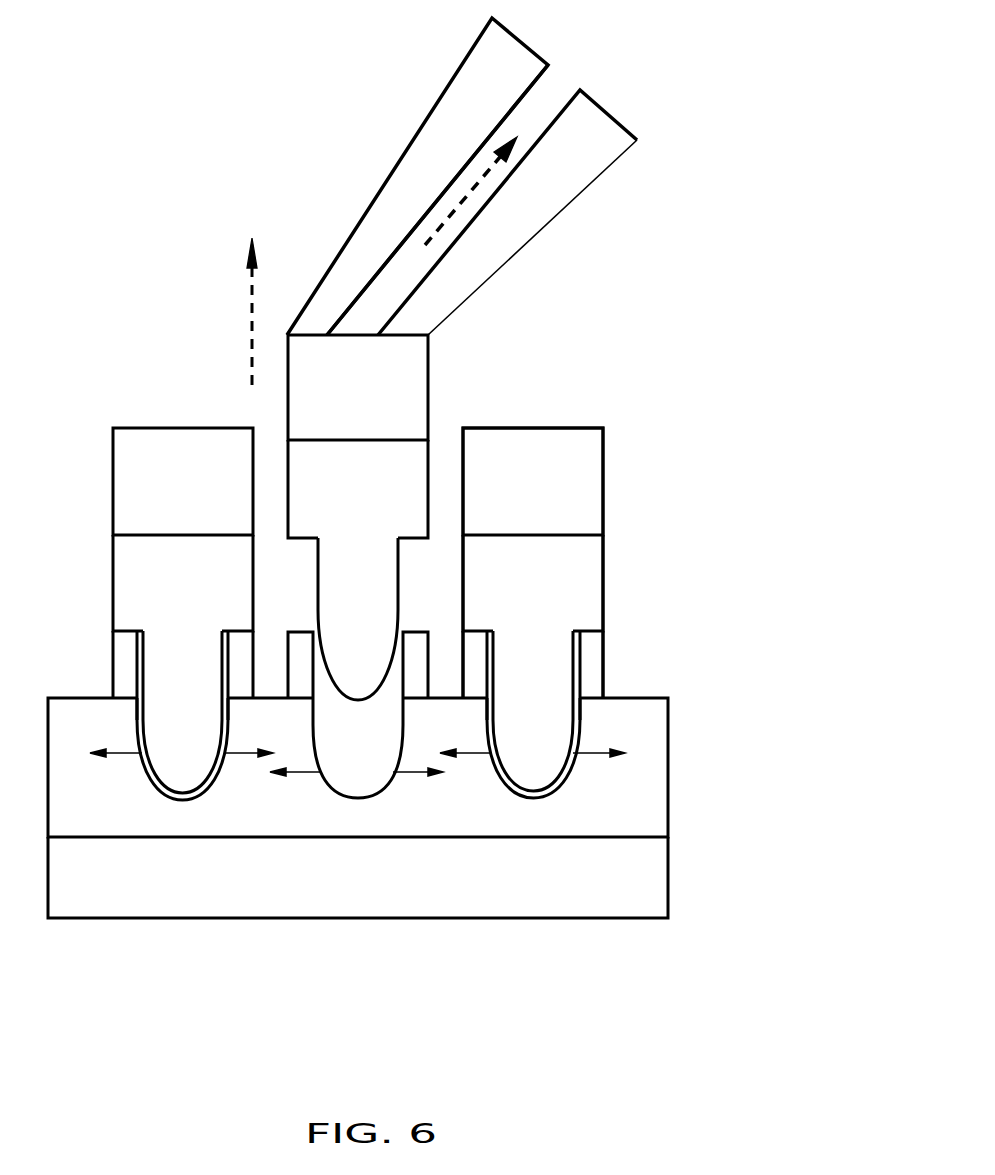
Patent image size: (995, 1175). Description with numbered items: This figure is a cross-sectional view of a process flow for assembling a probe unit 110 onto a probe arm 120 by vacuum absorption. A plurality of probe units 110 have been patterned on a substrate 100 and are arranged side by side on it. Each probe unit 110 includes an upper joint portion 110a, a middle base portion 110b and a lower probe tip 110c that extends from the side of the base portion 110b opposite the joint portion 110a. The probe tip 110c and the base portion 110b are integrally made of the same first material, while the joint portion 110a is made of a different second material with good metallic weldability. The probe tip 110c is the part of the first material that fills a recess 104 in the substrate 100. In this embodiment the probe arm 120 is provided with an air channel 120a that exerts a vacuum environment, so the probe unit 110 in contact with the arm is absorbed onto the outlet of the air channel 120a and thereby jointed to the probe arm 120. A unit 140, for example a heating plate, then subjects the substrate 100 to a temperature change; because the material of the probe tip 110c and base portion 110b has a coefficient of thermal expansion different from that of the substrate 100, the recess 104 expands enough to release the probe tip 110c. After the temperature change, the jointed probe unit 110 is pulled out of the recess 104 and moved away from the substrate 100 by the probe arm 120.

The substrate 100 is at (652, 778).
The recess 104 is at (382, 785).
The probe unit 110 is at (722, 680).
The joint portion 110a is at (385, 401).
The base portion 110b is at (385, 498).
The probe tip 110c is at (385, 597).
The probe arm 120 is at (512, 240).
The air channel 120a is at (553, 80).
The unit 140 is at (652, 883).